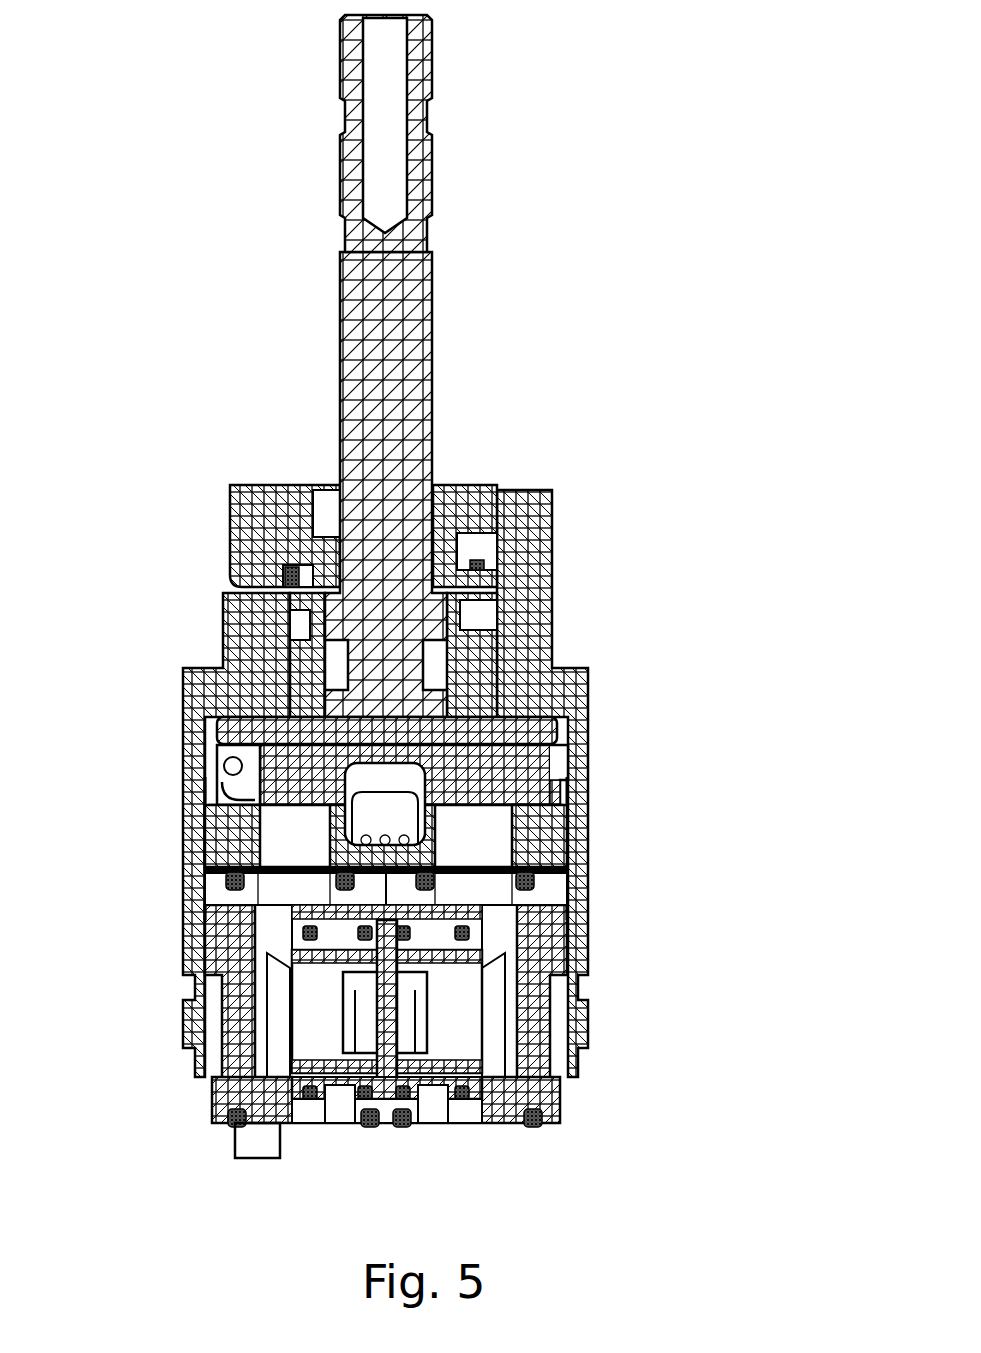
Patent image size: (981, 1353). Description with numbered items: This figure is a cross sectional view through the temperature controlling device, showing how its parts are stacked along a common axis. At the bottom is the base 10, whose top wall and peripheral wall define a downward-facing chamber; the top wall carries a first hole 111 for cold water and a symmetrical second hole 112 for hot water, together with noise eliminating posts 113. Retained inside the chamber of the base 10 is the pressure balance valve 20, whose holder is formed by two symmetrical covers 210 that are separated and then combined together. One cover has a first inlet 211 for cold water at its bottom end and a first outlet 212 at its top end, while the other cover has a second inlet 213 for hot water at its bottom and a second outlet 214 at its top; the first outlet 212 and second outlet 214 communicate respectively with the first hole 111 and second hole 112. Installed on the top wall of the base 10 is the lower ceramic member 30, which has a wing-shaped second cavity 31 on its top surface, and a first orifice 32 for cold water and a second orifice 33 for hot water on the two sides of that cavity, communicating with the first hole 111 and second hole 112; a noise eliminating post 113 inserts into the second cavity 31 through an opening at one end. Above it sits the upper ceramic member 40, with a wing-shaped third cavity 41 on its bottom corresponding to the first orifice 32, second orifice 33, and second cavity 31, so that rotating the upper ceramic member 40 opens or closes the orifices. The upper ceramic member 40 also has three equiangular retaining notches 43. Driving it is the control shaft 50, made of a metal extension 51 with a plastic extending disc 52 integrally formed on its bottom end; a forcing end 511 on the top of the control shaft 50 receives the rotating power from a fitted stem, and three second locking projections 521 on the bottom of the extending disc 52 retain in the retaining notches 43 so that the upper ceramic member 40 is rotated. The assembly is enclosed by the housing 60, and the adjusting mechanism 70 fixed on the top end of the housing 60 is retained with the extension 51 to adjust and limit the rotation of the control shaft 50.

The base 10 is at (585, 958).
The pressure balance valve 20 is at (399, 1129).
The lower ceramic member 30 is at (406, 821).
The second cavity 31 is at (285, 852).
The first orifice 32 is at (290, 873).
The second orifice 33 is at (490, 838).
The upper ceramic member 40 is at (557, 763).
The third cavity 41 is at (375, 780).
The retaining notches 43 is at (228, 755).
The control shaft 50 is at (464, 133).
The extension 51 is at (405, 330).
The extending disc 52 is at (545, 708).
The housing 60 is at (605, 790).
The adjusting mechanism 70 is at (226, 527).
The first hole 111 is at (275, 893).
The second hole 112 is at (490, 888).
The noise eliminating posts 113 is at (360, 818).
The covers 210 is at (560, 1092).
The first inlet 211 is at (340, 1112).
The first outlet 212 is at (270, 930).
The second inlet 213 is at (432, 1110).
The second outlet 214 is at (505, 937).
The forcing end 511 is at (432, 65).
The second locking projections 521 is at (245, 797).